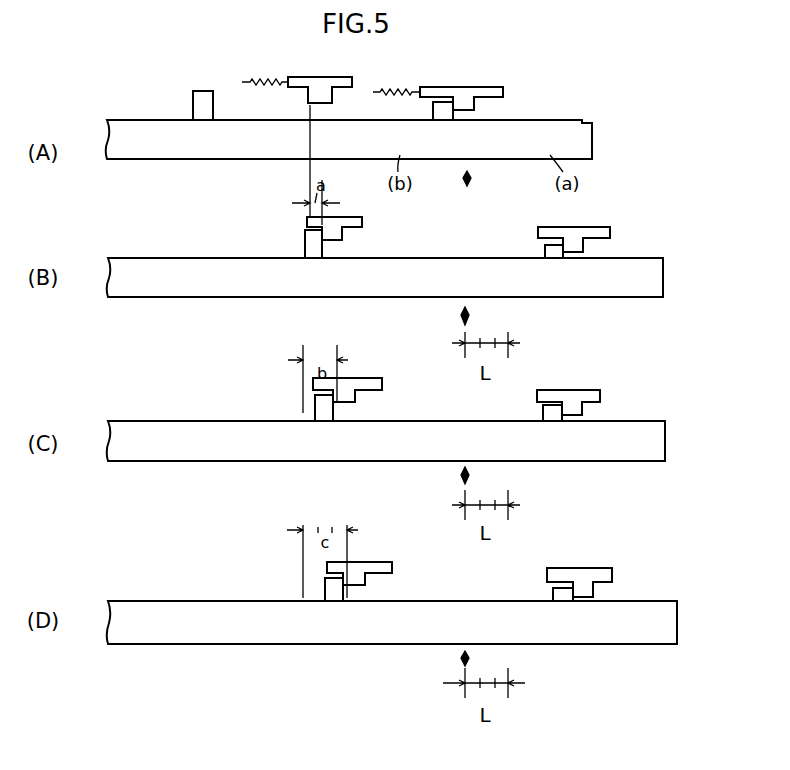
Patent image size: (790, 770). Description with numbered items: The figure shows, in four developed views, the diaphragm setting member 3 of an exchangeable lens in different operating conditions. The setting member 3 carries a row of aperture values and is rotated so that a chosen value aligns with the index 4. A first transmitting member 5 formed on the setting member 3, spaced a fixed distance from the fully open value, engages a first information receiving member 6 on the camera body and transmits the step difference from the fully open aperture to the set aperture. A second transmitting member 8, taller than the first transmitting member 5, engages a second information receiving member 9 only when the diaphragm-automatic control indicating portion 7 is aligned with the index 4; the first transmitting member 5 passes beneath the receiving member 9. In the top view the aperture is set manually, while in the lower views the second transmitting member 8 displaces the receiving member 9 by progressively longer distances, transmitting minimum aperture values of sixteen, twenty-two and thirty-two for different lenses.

The diaphragm setting member 3 is at (583, 128).
The index 4 is at (469, 186).
The first transmitting member 5 is at (440, 108).
The first information receiving member 6 is at (460, 103).
The diaphragm-automatic control indicating portion 7 is at (349, 136).
The second transmitting member 8 is at (203, 112).
The second information receiving member 9 is at (322, 93).